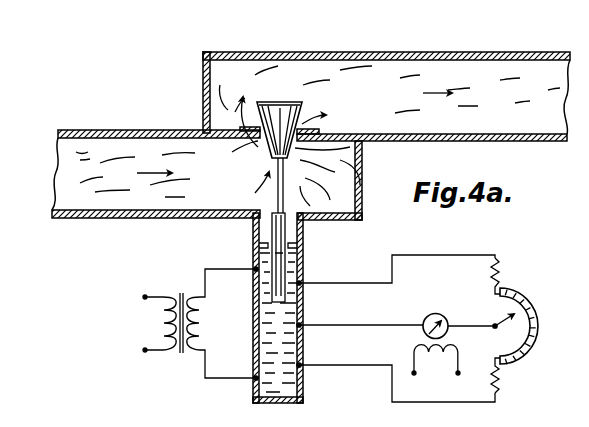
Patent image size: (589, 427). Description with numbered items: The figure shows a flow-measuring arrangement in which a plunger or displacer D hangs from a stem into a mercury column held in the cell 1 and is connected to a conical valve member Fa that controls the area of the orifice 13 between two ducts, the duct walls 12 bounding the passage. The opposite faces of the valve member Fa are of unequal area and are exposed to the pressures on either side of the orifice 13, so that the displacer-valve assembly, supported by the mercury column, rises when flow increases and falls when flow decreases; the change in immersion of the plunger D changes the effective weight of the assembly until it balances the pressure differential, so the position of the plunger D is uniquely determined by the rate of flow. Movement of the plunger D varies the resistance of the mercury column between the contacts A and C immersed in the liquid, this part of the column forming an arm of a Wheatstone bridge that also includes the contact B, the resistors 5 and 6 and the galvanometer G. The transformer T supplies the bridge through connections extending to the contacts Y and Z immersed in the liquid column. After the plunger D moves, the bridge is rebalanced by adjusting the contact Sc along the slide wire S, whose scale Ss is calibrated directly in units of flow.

The conical valve member Fa is at (270, 100).
The orifice 13 is at (300, 143).
The chamber wall 12 is at (362, 200).
The electrolytic cell 1 is at (301, 318).
The plunger D is at (275, 225).
The contact Y is at (256, 270).
The contact Z is at (256, 380).
The transformer T is at (181, 356).
The contact A is at (300, 282).
The contact C is at (300, 326).
The contact B is at (300, 367).
The resistor 5 is at (498, 272).
The resistor 6 is at (498, 386).
The galvanometer G is at (431, 314).
The contact Sc is at (510, 311).
The slide wire S is at (540, 318).
The scale Ss is at (536, 347).